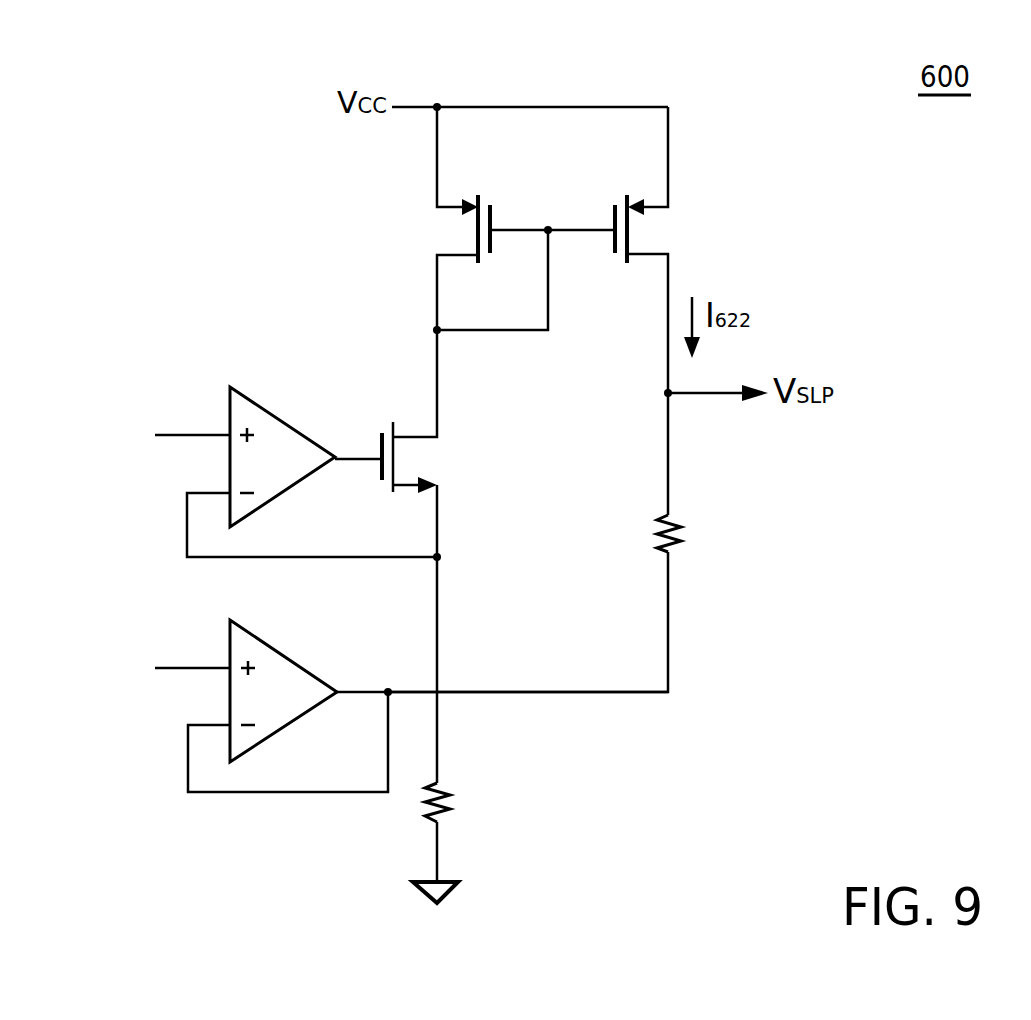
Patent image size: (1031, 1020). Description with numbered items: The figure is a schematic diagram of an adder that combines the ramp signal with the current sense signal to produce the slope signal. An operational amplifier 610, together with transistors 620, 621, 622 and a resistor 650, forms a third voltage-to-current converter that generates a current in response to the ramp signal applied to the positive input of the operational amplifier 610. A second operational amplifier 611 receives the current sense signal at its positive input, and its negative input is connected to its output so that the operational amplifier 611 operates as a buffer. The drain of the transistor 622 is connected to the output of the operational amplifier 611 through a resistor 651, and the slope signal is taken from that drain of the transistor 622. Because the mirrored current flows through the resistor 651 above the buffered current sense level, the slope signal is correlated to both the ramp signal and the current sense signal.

The operational amplifier 610 is at (287, 417).
The operational amplifier 611 is at (287, 648).
The transistor 620 is at (438, 460).
The transistor 621 is at (432, 230).
The transistor 622 is at (675, 225).
The resistor 650 is at (457, 805).
The resistor 651 is at (685, 538).